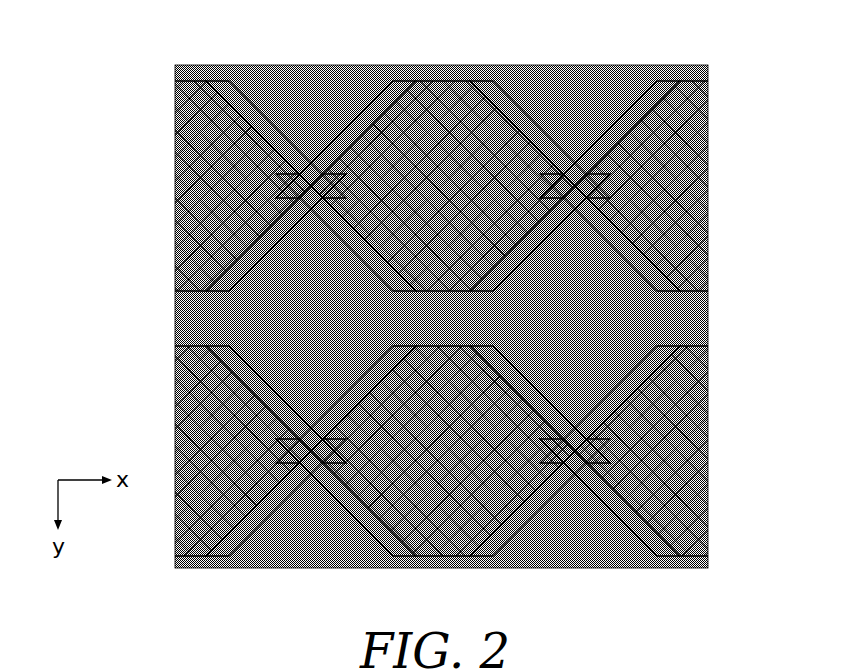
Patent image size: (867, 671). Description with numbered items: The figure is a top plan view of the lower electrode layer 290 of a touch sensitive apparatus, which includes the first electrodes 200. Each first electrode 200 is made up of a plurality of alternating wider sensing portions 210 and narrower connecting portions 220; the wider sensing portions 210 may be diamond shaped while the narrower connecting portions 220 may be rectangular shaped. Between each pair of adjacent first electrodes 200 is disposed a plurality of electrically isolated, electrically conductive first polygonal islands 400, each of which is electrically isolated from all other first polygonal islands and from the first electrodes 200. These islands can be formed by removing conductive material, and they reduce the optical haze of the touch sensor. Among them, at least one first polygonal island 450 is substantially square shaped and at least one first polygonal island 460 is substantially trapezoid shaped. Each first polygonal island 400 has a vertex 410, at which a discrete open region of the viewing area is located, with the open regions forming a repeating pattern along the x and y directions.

The first electrode 200 is at (443, 319).
The wider sensing portion 210 is at (565, 372).
The narrower connecting portion 220 is at (437, 305).
The lower electrode layer 290 is at (251, 56).
The first polygonal island 400 is at (628, 107).
The vertex 410 is at (322, 150).
The first polygonal island 450 is at (675, 512).
The first polygonal island 460 is at (628, 512).